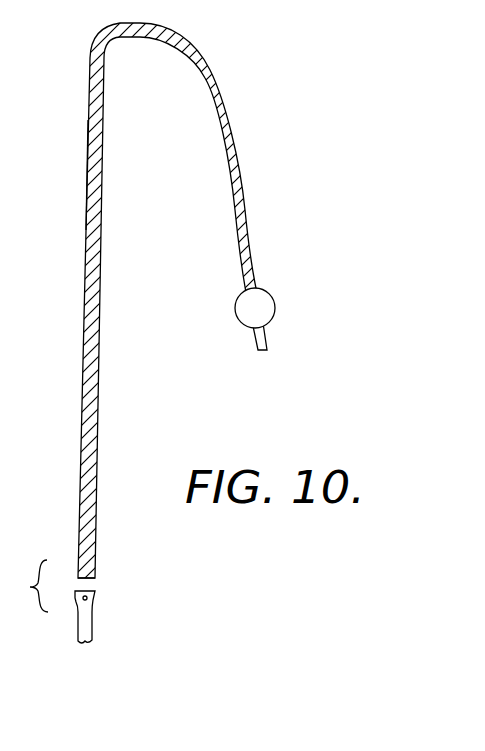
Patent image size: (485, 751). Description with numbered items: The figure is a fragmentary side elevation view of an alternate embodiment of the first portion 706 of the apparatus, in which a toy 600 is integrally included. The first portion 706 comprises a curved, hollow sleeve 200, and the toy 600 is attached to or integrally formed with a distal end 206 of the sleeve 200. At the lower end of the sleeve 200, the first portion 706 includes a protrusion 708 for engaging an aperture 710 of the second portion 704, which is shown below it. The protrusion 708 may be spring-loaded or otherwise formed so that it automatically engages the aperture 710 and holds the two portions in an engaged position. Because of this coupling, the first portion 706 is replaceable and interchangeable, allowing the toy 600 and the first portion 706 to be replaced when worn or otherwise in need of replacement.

The sleeve 200 is at (205, 54).
The distal end 206 is at (250, 285).
The toy 600 is at (270, 318).
The first portion 706 is at (85, 231).
The protrusion 708 is at (85, 573).
The aperture 710 is at (87, 599).
The second portion 704 is at (85, 621).